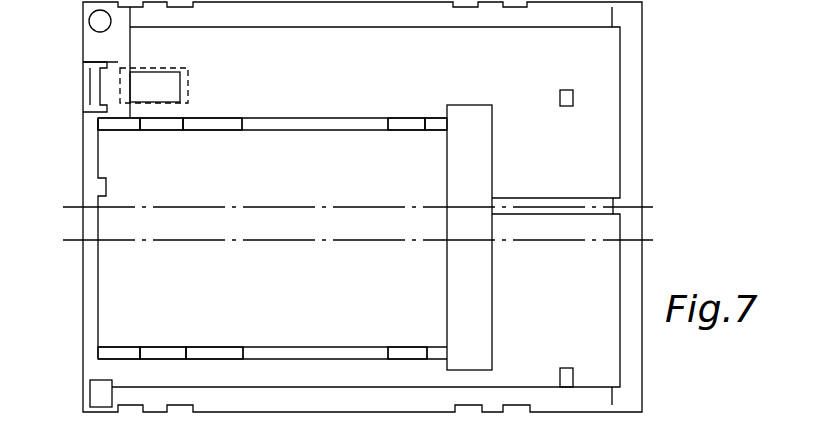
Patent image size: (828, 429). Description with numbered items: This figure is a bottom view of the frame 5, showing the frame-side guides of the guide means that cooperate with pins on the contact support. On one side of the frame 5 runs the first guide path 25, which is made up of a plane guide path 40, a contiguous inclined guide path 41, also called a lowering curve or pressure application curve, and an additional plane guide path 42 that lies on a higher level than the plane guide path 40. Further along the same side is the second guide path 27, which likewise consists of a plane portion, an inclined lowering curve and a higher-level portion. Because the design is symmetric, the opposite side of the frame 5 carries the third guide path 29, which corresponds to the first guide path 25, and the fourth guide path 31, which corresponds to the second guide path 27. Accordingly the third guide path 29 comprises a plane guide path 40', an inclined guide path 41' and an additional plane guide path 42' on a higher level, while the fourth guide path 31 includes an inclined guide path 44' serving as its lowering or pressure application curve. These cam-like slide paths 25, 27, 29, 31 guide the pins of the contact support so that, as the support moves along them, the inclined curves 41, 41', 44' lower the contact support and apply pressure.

The housing 5 is at (82, 50).
The first guide path 25 is at (202, 343).
The second guide path 27 is at (407, 343).
The third guide path 29 is at (203, 132).
The fourth guide path 31 is at (412, 134).
The plane guide path 40 is at (121, 330).
The inclined guide path 41 is at (163, 320).
The additional plane guide path 42 is at (235, 327).
The plane guide path 40' is at (123, 147).
The inclined guide path 41' is at (156, 160).
The additional plane guide path 42' is at (237, 150).
The inclined guide path 44' is at (410, 96).